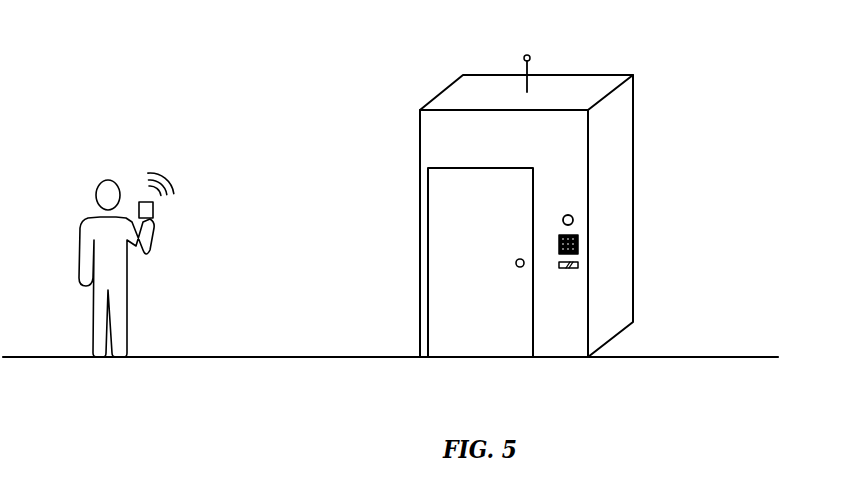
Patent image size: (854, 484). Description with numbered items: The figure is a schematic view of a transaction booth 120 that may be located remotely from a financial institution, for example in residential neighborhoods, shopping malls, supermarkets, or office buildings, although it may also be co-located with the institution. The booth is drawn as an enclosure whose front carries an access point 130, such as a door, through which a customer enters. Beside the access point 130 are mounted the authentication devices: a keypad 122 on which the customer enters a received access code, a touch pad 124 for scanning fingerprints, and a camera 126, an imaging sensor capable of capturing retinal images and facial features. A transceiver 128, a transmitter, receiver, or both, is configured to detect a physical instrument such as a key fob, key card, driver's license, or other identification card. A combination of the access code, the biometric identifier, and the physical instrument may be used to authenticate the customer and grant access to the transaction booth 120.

The transaction booth 120 is at (662, 38).
The keypad 122 is at (578, 235).
The touch pad 124 is at (580, 262).
The camera 126 is at (571, 214).
The transceiver 128 is at (527, 55).
The access point 130 is at (481, 167).